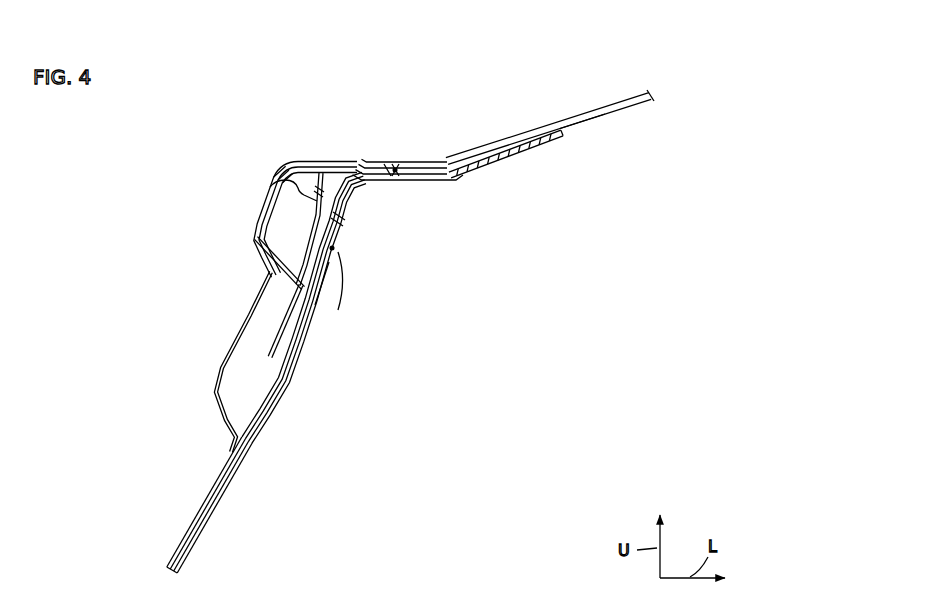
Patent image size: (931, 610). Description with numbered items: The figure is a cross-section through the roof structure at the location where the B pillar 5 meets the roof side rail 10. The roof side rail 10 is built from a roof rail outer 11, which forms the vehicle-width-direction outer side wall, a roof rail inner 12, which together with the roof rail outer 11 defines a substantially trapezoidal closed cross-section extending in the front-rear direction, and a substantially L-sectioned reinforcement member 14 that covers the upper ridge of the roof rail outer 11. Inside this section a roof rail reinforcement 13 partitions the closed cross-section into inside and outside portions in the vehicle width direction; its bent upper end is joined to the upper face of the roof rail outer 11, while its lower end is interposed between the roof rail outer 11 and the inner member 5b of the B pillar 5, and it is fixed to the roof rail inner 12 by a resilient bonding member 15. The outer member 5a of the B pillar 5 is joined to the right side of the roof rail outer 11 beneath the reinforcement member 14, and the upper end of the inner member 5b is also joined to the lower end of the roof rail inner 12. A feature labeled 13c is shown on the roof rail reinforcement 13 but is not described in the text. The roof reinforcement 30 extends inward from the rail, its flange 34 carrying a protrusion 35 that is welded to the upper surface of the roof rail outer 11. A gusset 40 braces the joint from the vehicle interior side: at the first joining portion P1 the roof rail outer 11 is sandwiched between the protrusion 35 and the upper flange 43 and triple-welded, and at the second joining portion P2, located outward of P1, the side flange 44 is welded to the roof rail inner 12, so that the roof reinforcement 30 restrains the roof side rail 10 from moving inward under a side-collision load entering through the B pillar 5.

The B pillar 5 is at (196, 499).
The outer member 5a is at (192, 524).
The inner member 5b is at (224, 500).
The roof side rail 10 is at (276, 165).
The roof rail outer 11 is at (282, 268).
The roof rail inner 12 is at (293, 372).
The roof rail reinforcement 13 is at (321, 172).
The hook portion 13c is at (270, 187).
The reinforcement member 14 is at (293, 161).
The resilient bonding member 15 is at (318, 306).
The roof reinforcement 30 is at (606, 102).
The flange 34 is at (573, 118).
The protrusion 35 is at (388, 164).
The gusset 40 is at (507, 162).
The upper flange 43 is at (457, 181).
The side flange 44 is at (338, 311).
The first joining portion P1 is at (395, 166).
The second joining portion P2 is at (334, 250).